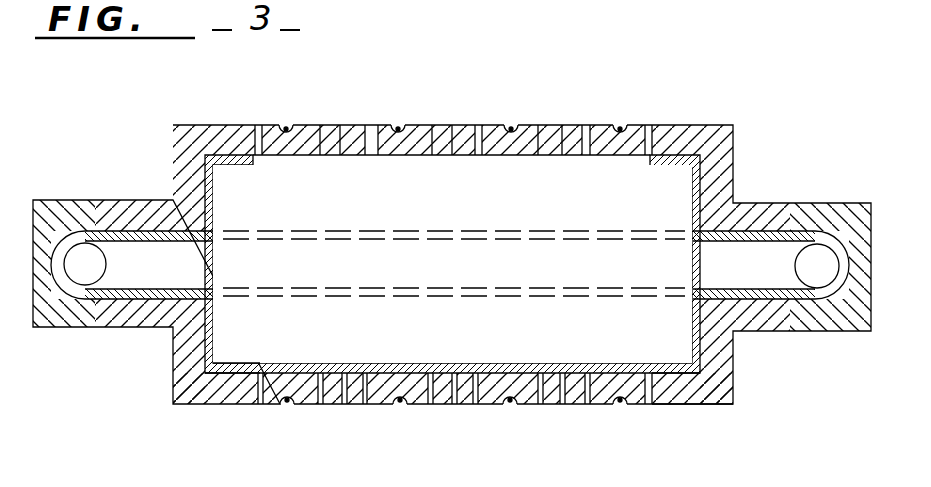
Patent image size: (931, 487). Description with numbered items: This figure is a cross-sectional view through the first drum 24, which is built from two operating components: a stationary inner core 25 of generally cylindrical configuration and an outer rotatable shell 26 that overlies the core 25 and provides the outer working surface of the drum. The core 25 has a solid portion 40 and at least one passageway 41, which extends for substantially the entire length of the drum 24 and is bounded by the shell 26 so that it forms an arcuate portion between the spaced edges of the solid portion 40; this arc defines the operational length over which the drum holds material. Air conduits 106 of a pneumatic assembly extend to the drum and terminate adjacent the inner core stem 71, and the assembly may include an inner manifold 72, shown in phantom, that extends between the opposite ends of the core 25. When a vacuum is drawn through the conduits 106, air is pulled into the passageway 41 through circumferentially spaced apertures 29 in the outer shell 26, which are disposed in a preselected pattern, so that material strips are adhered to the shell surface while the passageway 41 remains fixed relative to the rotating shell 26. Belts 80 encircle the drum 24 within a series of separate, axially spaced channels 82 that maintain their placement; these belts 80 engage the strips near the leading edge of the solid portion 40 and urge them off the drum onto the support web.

The first drum 24 is at (205, 116).
The stationary inner core 25 is at (213, 210).
The outer rotatable shell 26 is at (672, 392).
The apertures 29 is at (257, 128).
The solid portion 40 is at (237, 372).
The passageway 41 is at (395, 182).
The inner core stem 71 is at (167, 300).
The inner manifold 72 is at (352, 296).
The belts 80 is at (286, 124).
The channels 82 is at (613, 126).
The air conduits 106 is at (90, 278).